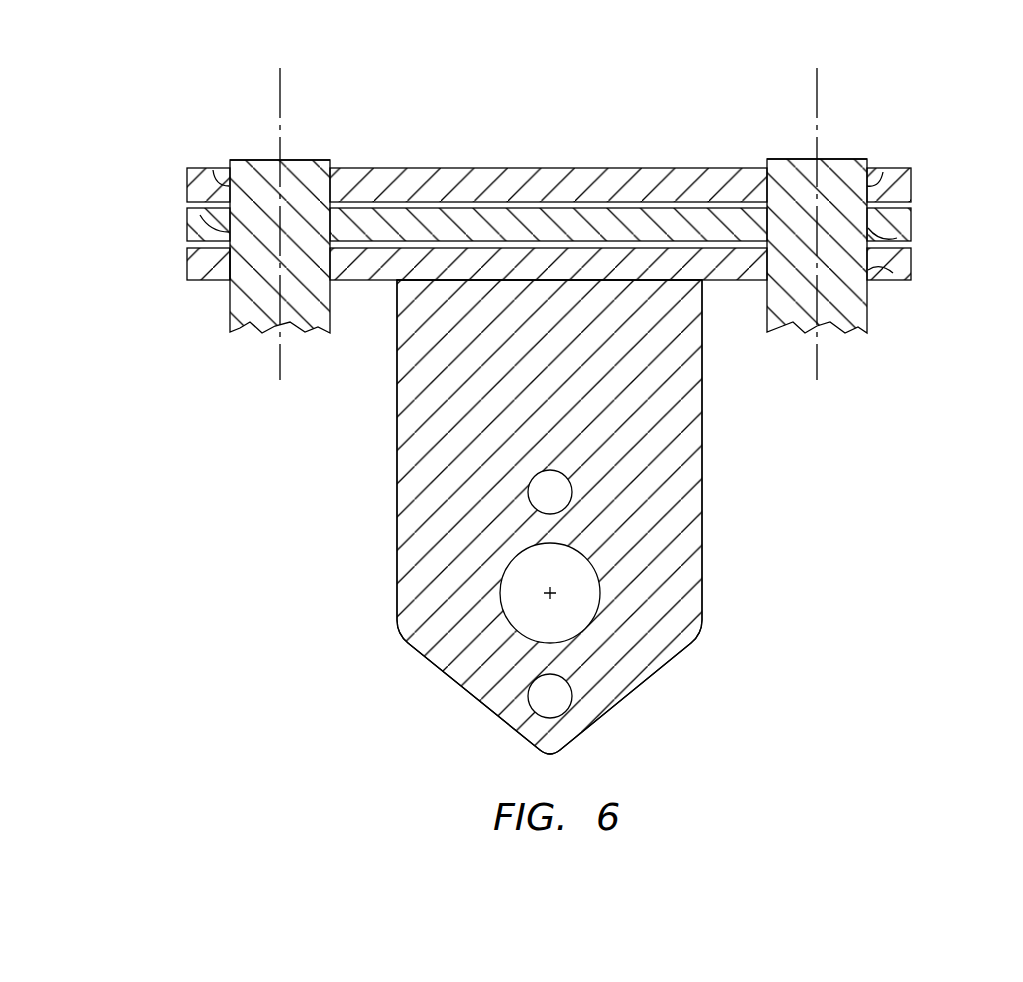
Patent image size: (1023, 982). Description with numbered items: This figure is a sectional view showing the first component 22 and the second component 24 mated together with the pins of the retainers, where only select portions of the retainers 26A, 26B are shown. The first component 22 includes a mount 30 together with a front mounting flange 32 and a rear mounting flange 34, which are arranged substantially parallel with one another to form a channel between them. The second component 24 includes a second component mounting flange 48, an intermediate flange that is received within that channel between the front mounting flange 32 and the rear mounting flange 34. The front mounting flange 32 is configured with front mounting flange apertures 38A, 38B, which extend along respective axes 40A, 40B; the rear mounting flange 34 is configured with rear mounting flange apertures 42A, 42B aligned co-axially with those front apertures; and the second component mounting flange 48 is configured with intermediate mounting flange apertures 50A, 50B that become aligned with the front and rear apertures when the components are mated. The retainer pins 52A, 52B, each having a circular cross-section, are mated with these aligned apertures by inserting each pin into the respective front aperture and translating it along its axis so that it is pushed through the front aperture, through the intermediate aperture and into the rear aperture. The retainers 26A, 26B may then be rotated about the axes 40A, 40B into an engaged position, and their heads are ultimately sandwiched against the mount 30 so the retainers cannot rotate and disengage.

The first component 22 is at (368, 552).
The second component 24 is at (545, 216).
The retainer 26A is at (229, 318).
The retainer 26B is at (869, 317).
The mount 30 is at (702, 546).
The front mounting flange 32 is at (185, 275).
The rear mounting flange 34 is at (186, 180).
The front mounting flange aperture 38A is at (229, 255).
The front mounting flange aperture 38B is at (872, 270).
The axis 40A is at (276, 82).
The axis 40B is at (822, 80).
The rear mounting flange aperture 42A is at (216, 178).
The rear mounting flange aperture 42B is at (880, 176).
The second component mounting flange 48 is at (185, 218).
The intermediate mounting flange aperture 50A is at (187, 205).
The intermediate mounting flange aperture 50B is at (870, 229).
The retainer pin 52A is at (311, 158).
The retainer pin 52B is at (843, 157).